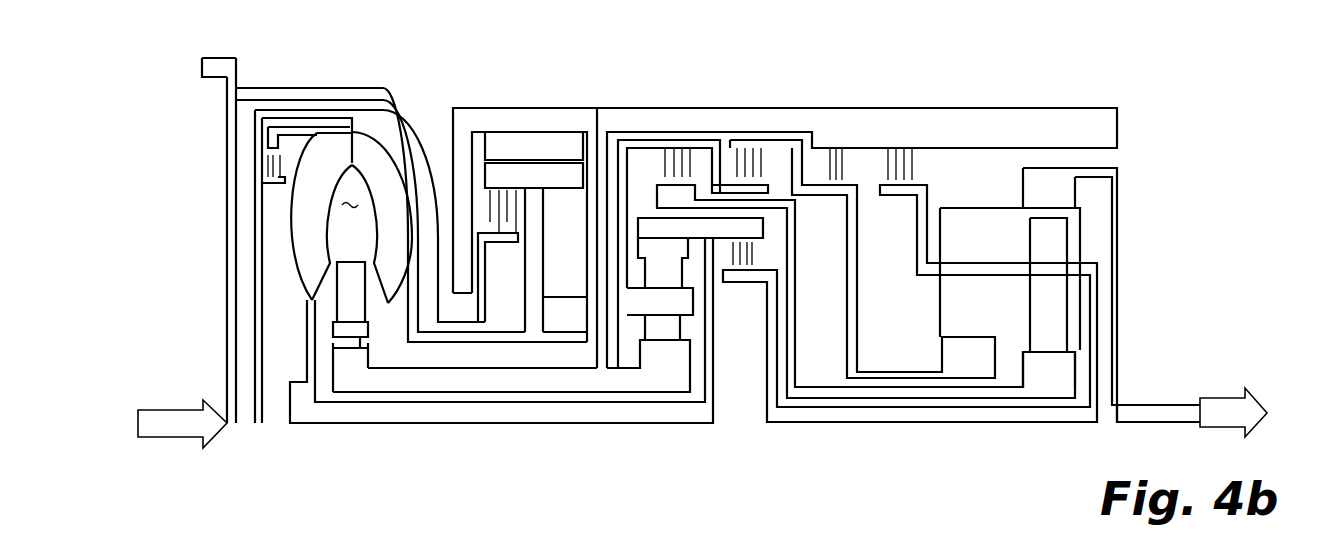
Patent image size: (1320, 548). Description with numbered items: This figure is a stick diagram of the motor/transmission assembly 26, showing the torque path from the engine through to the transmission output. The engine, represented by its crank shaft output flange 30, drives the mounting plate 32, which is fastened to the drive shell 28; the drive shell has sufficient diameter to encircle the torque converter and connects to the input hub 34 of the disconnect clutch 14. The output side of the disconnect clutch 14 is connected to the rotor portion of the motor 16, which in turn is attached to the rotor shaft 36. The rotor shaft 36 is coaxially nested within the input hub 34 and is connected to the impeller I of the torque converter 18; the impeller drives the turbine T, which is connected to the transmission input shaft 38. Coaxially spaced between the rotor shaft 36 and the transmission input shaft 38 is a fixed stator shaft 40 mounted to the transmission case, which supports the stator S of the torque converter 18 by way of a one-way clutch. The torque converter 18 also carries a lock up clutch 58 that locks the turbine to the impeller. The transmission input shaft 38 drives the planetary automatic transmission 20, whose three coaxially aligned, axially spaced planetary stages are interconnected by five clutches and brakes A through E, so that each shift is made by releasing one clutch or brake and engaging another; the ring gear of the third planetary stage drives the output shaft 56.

The disconnect clutch 14 is at (490, 196).
The motor 16 is at (582, 143).
The torque converter 18 is at (351, 200).
The automatic transmission 20 is at (963, 108).
The motor/transmission assembly 26 is at (767, 61).
The drive shell 28 is at (287, 86).
The crank shaft output flange 30 is at (185, 410).
The mounting plate 32 is at (227, 287).
The input hub 34 is at (462, 325).
The rotor shaft 36 is at (493, 345).
The transmission input shaft 38 is at (537, 394).
The stator shaft 40 is at (601, 425).
The output shaft 56 is at (333, 345).
The lock up clutch 58 is at (267, 172).